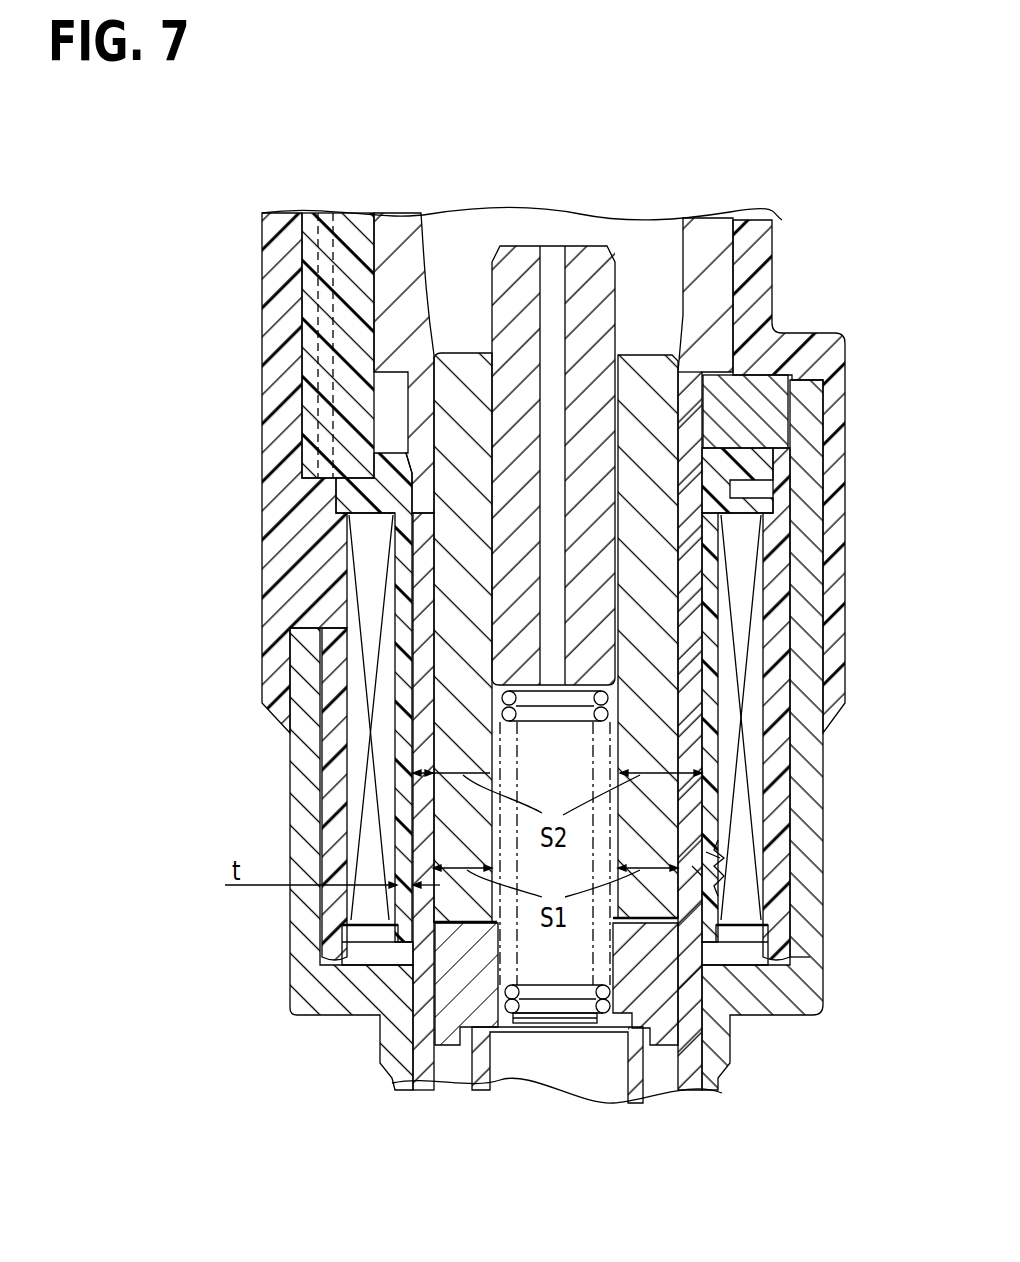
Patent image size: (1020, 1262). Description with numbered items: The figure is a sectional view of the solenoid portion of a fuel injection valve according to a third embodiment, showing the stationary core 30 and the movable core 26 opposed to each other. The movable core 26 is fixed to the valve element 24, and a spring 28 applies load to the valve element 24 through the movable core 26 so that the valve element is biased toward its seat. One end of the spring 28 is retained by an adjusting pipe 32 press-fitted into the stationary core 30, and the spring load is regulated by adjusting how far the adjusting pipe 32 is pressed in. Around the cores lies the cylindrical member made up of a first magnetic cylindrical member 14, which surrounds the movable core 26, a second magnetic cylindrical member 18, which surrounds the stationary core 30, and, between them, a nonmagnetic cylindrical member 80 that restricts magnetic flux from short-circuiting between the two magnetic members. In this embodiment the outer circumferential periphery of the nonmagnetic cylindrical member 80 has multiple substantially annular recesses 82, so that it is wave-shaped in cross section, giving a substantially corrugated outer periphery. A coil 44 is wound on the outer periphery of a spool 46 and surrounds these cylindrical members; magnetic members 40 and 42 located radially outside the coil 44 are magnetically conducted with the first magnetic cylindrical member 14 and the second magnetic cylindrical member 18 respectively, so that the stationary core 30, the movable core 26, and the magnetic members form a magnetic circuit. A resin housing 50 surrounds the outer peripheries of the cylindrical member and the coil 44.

The first magnetic cylindrical member 14 is at (703, 1040).
The second magnetic cylindrical member 18 is at (690, 578).
The valve element 24 is at (637, 1097).
The movable core 26 is at (452, 1016).
The spring 28 is at (612, 718).
The stationary core 30 is at (647, 360).
The adjusting pipe 32 is at (515, 256).
The magnetic member 40 is at (803, 990).
The magnetic member 42 is at (755, 382).
The coil 44 is at (357, 573).
The spool 46 is at (402, 603).
The resin housing 50 is at (262, 292).
The nonmagnetic cylindrical member 80 is at (694, 871).
The recesses 82 is at (706, 856).